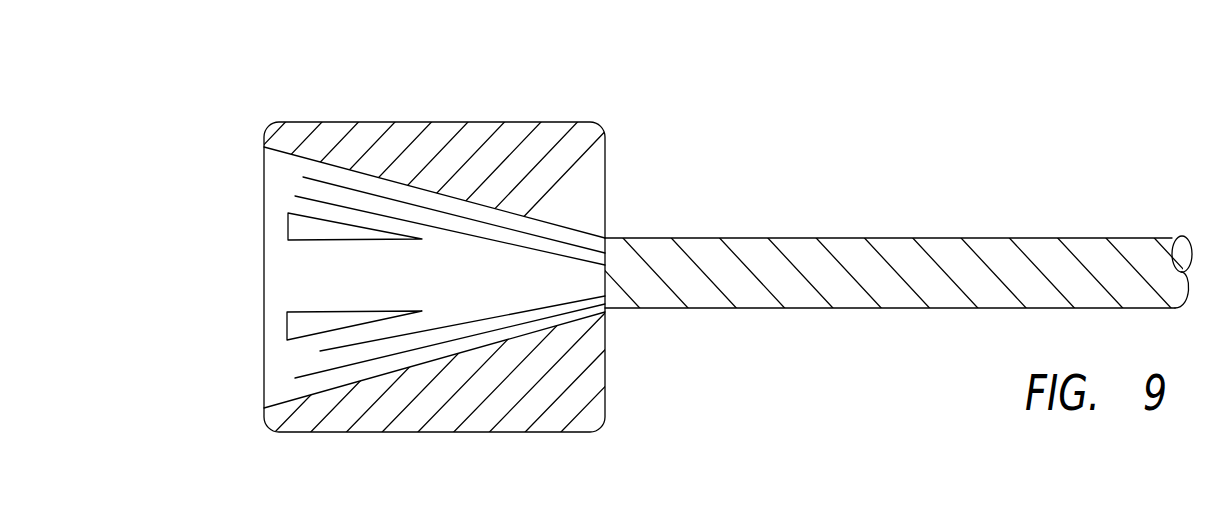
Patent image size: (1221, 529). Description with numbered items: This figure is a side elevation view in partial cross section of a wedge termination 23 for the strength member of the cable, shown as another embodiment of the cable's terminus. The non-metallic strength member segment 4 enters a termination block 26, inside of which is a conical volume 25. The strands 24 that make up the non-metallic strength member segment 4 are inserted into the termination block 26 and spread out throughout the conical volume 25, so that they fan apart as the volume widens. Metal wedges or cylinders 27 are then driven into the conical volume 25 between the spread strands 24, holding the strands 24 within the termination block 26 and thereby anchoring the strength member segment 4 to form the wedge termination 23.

The non-metallic strength member segment 4 is at (895, 237).
The wedge termination 23 is at (683, 150).
The strands 24 is at (497, 323).
The conical volume 25 is at (452, 277).
The termination block 26 is at (435, 122).
The metal wedges or cylinders 27 is at (286, 328).